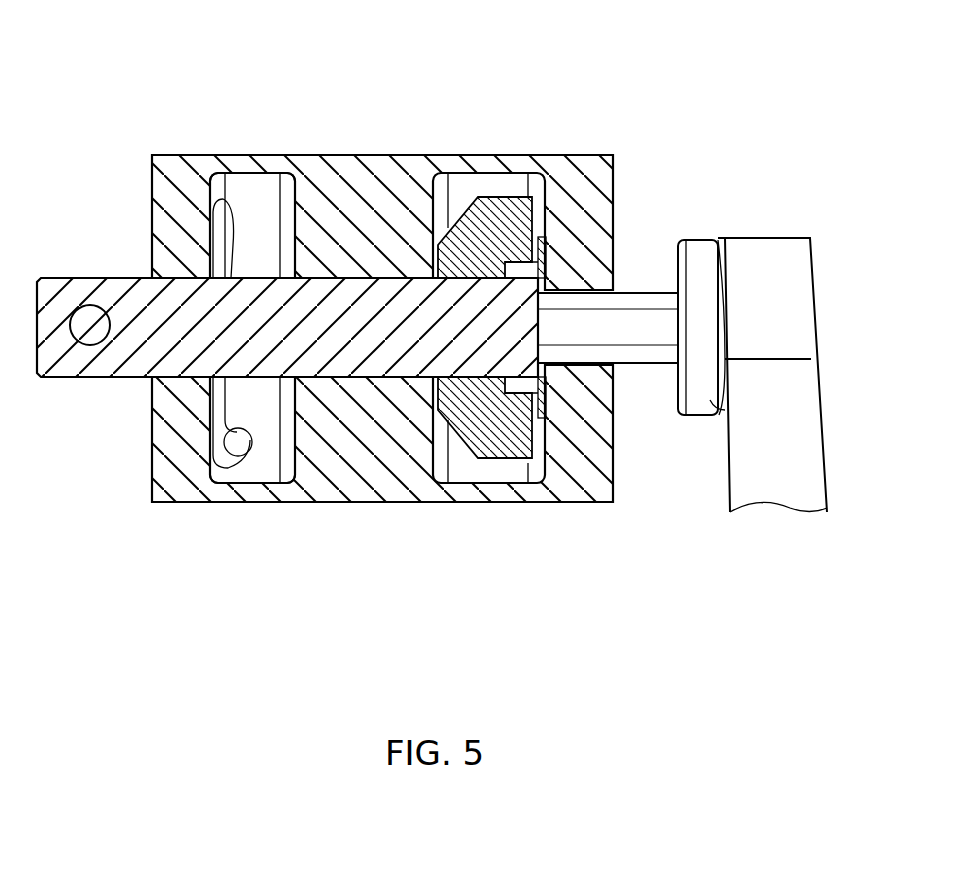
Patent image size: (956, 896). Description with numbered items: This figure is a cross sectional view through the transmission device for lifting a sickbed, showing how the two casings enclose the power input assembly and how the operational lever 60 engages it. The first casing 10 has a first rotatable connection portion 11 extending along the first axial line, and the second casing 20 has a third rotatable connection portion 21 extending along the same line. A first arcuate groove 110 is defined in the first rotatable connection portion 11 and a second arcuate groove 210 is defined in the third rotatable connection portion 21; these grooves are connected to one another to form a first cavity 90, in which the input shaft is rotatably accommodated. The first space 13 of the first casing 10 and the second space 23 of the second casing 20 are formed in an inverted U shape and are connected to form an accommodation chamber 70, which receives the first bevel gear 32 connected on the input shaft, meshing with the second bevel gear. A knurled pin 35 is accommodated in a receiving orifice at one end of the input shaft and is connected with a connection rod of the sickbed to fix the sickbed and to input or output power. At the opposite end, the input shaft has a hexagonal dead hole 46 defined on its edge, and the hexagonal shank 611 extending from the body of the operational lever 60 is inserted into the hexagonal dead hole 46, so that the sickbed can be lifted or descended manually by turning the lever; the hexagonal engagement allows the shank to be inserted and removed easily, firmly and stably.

The first casing 10 is at (381, 505).
The first rotatable connection portion 11 is at (263, 497).
The first arcuate groove 110 is at (323, 374).
The second casing 20 is at (381, 153).
The third rotatable connection portion 21 is at (312, 155).
The second arcuate groove 210 is at (353, 262).
The first cavity 90 is at (296, 451).
The accommodation chamber 70 is at (369, 249).
The first space 13 is at (463, 463).
The second space 23 is at (462, 190).
The first bevel gear 32 is at (496, 245).
The knurled pin 35 is at (92, 322).
The hexagonal dead hole 46 is at (595, 321).
The operational lever 60 is at (765, 225).
The hexagonal shank 611 is at (640, 352).